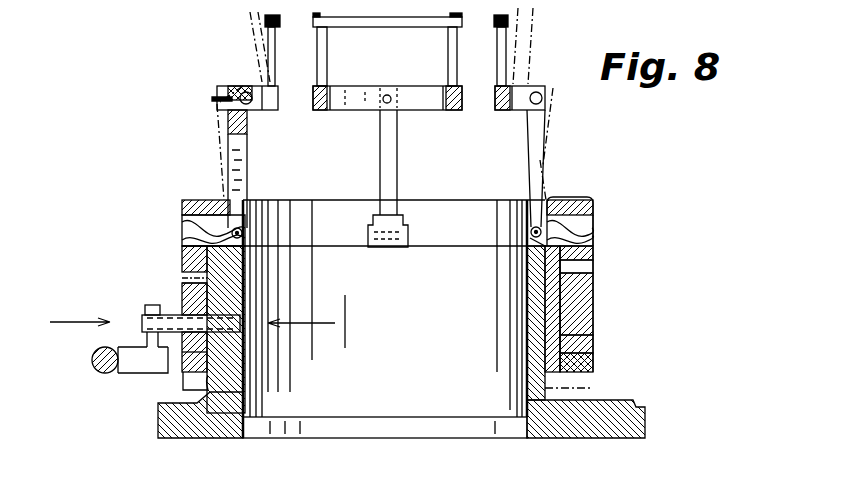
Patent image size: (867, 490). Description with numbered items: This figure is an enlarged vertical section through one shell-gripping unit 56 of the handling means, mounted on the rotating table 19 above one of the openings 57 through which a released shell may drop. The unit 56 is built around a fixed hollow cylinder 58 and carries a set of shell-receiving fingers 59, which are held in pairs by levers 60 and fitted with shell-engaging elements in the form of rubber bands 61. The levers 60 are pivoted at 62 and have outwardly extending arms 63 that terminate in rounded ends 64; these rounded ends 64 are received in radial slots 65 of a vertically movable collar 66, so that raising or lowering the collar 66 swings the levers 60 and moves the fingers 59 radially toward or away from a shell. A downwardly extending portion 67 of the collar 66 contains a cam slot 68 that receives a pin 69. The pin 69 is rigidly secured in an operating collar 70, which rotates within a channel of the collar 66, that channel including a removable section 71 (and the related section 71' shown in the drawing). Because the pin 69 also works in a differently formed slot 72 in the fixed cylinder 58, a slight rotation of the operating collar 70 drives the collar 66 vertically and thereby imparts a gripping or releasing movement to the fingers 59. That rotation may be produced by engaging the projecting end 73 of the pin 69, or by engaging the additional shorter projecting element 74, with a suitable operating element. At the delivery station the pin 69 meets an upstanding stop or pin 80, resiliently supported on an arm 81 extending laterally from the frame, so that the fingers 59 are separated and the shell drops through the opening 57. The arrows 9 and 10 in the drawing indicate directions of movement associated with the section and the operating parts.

The rubber bands 61 is at (399, 26).
The shell-receiving fingers 59 is at (502, 65).
The levers 60 is at (392, 154).
The packing ring 71' is at (586, 187).
The shell-gripping unit 56 is at (626, 200).
The rounded ends 64 is at (563, 225).
The radial slots 65 is at (572, 242).
The vertically movable collar 66 is at (590, 272).
The pivot 62 is at (530, 232).
The outwardly extending arms 63 is at (545, 237).
The operating collar 70 is at (585, 322).
The downwardly extending portion 67 is at (593, 337).
The removable section 71 is at (395, 378).
The fixed hollow cylinder 58 is at (560, 400).
The cam slot 68 is at (247, 297).
The piston 10 is at (347, 303).
The direction arrow 9 is at (72, 314).
The projecting end 73 is at (145, 318).
The upstanding stop or pin 80 is at (162, 312).
The shorter projecting element 74 is at (185, 236).
The arm 81 is at (98, 378).
The pin 69 is at (197, 357).
The rotating table 19 is at (187, 437).
The openings 57 is at (328, 427).
The slot 72 is at (268, 388).